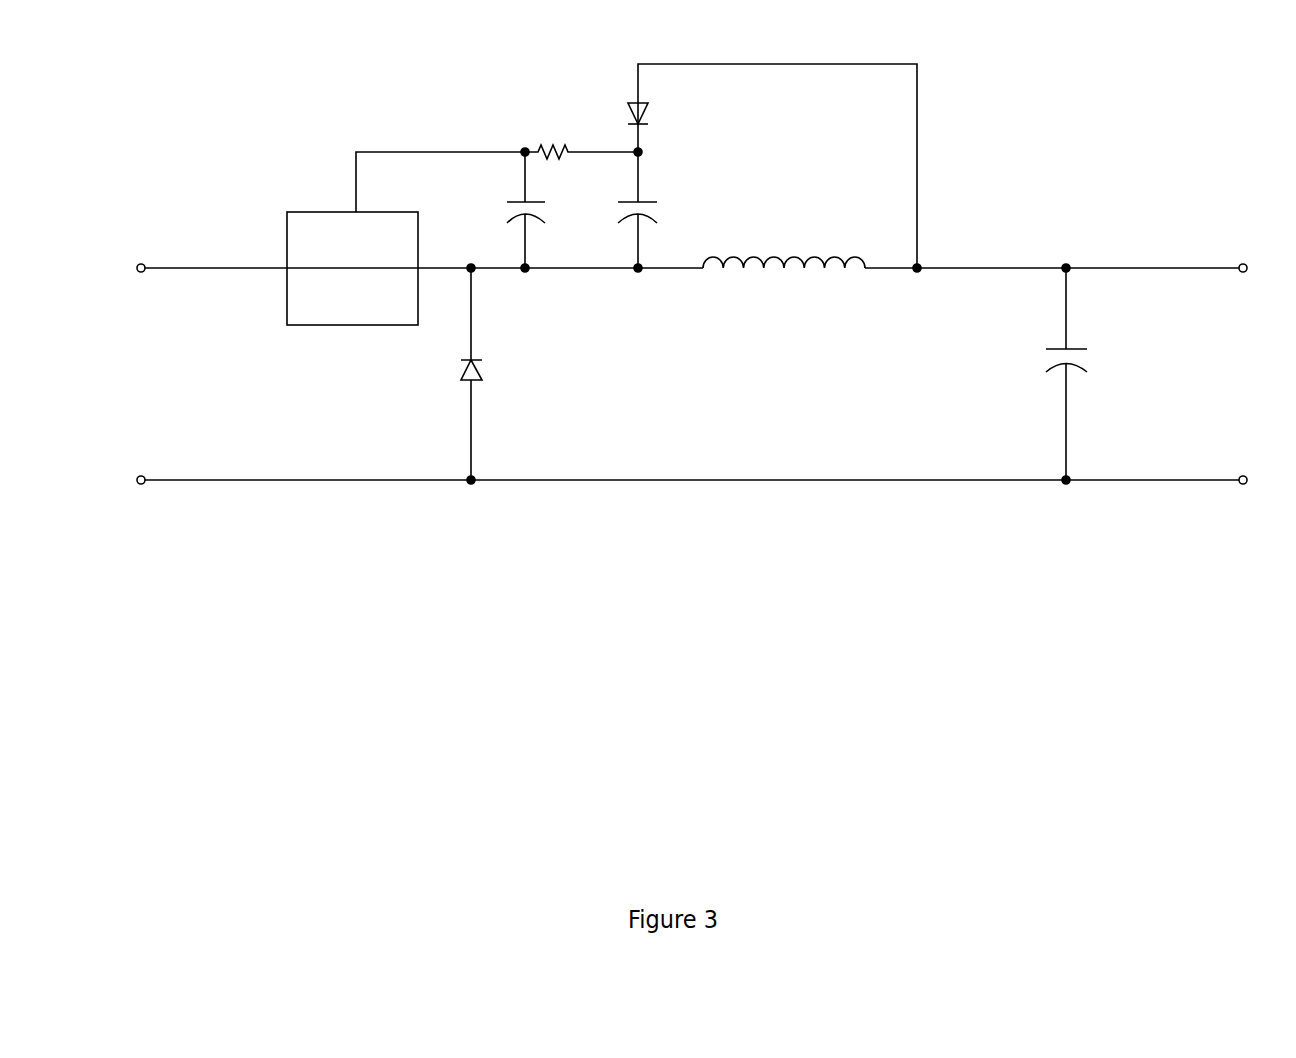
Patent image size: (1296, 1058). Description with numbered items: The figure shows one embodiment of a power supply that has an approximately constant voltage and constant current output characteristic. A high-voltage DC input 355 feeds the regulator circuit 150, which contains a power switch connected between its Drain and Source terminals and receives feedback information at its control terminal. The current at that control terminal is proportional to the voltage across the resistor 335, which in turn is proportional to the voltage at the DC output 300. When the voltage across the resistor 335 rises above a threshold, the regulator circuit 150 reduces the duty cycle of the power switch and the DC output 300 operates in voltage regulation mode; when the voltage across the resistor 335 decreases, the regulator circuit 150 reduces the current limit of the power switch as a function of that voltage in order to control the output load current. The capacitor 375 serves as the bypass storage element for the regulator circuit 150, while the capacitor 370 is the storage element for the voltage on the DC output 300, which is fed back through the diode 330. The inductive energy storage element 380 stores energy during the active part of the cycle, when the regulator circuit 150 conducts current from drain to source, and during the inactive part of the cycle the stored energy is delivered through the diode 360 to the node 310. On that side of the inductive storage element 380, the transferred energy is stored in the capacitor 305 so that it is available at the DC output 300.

The regulator circuit 150 is at (352, 268).
The HV DC input 355 is at (593, 374).
The resistor 335 is at (553, 135).
The diode 330 is at (657, 112).
The capacitor 375 is at (548, 215).
The capacitor 370 is at (665, 215).
The inductive energy storage element 380 is at (790, 278).
The diode 360 is at (488, 370).
The node 310 is at (993, 254).
The capacitor 305 is at (1040, 365).
The DC output 300 is at (1166, 374).